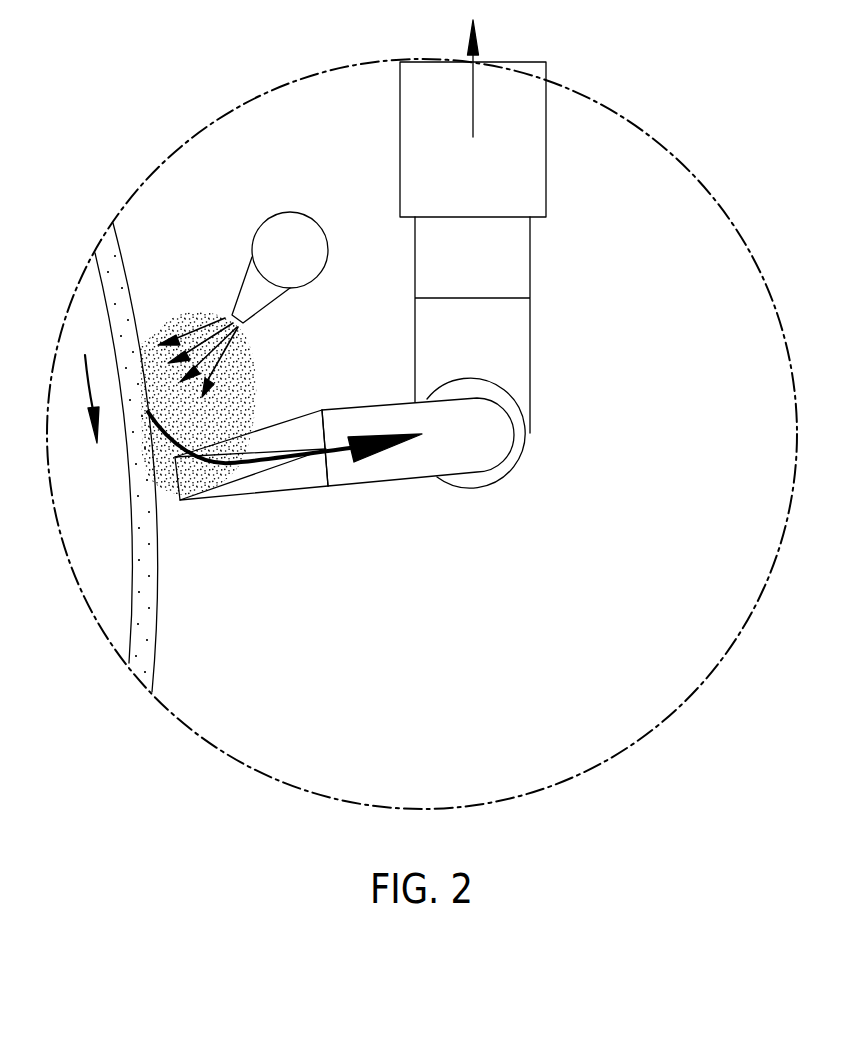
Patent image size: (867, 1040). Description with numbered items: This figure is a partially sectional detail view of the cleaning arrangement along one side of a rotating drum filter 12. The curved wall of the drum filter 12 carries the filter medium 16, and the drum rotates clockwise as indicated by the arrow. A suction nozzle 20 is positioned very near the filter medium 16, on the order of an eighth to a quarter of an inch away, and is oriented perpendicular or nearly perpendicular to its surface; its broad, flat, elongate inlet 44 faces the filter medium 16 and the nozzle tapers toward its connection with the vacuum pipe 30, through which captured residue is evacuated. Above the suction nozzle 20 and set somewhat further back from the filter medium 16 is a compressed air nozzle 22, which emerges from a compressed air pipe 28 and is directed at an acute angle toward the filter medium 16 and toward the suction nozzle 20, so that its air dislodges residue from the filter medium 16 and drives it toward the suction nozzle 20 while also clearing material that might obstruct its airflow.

The drum filter 12 is at (105, 315).
The filter medium 16 is at (157, 582).
The suction nozzle 20 is at (408, 472).
The compressed air nozzle 22 is at (258, 302).
The compressed air pipe 28 is at (307, 215).
The vacuum pipe 30 is at (533, 437).
The inlet 44 is at (175, 500).